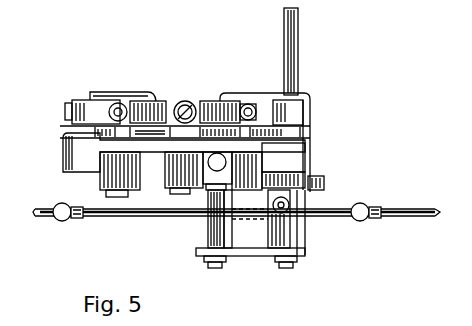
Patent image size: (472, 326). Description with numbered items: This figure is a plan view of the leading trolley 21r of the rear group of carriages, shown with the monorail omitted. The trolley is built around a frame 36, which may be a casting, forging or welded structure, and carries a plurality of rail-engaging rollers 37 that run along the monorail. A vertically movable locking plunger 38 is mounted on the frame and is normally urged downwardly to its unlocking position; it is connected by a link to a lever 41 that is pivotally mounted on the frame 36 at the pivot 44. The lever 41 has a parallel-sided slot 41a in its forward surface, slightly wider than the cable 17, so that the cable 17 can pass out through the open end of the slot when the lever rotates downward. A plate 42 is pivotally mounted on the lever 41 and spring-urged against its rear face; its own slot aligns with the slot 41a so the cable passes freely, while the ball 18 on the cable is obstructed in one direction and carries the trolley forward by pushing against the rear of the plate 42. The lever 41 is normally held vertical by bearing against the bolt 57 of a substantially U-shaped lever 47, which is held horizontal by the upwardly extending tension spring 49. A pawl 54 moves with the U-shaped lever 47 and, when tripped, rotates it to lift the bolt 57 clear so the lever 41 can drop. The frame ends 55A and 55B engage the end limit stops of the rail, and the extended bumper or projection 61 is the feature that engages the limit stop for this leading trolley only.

The cable 17 is at (110, 218).
The ball 18 is at (62, 222).
The leading trolley of the rear group 21r is at (193, 91).
The frame 36 is at (263, 94).
The rail-engaging rollers 37 is at (65, 110).
The locking plunger 38 is at (223, 162).
The lever 41 is at (211, 246).
The slot 41a is at (228, 232).
The plate 42 is at (233, 251).
The pivot 44 is at (288, 268).
The U-shaped lever 47 is at (305, 255).
The tension spring 49 is at (325, 184).
The pawl 54 is at (303, 114).
The end of trolley frame 55A is at (65, 150).
The end of trolley frame 55B is at (308, 162).
The bolt 57 is at (213, 268).
The bumper or projection 61 is at (298, 54).